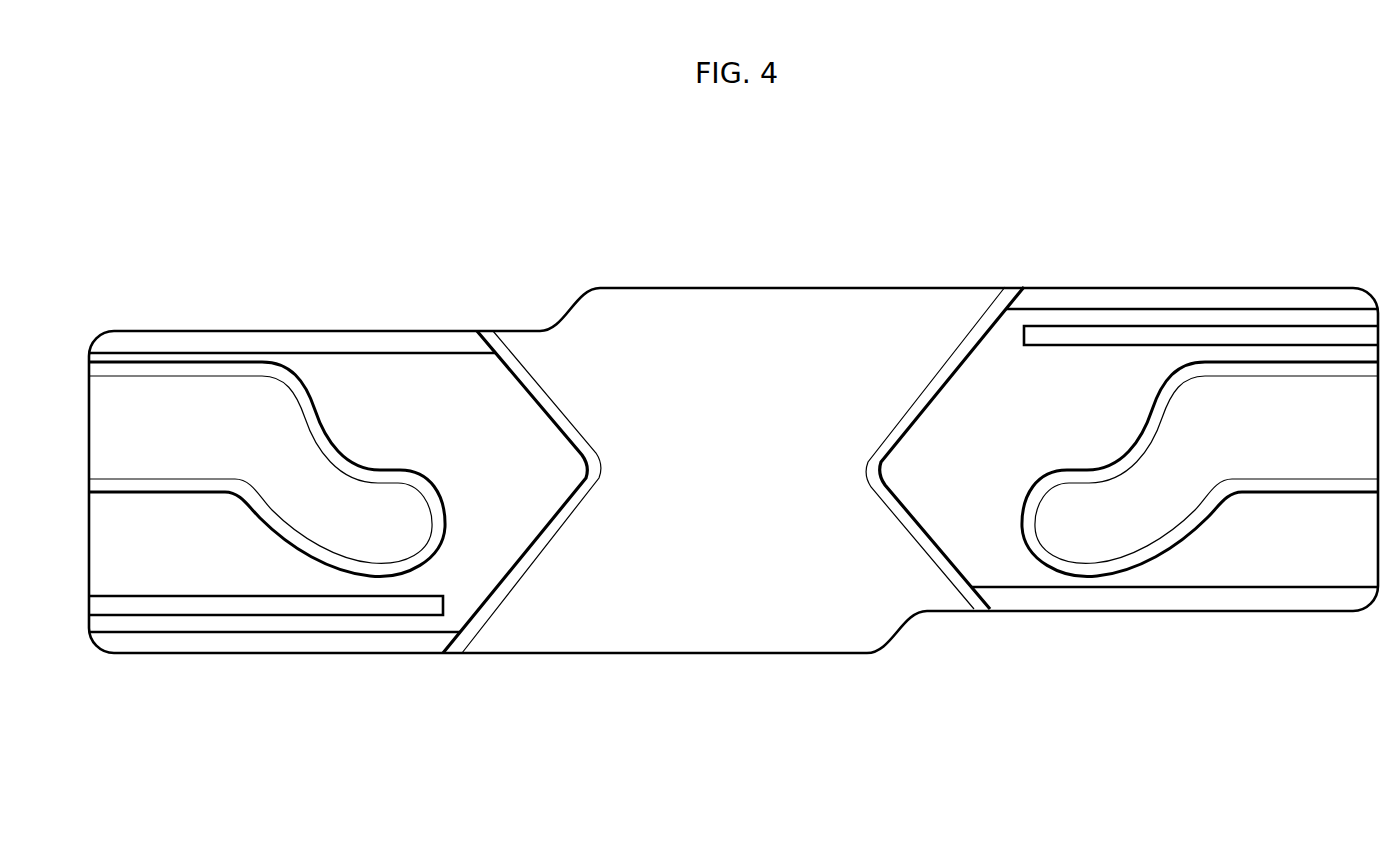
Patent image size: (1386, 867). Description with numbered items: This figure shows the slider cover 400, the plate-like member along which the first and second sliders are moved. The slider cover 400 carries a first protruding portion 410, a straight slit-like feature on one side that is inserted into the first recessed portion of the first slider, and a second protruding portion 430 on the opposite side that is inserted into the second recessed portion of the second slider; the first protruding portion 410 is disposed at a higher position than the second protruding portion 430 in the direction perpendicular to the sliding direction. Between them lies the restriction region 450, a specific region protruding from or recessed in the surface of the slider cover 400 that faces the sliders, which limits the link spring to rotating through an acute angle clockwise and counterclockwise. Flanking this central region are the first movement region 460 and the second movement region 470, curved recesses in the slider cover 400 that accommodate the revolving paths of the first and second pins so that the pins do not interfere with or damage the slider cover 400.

The slider cover 400 is at (969, 262).
The first protruding portion 410 is at (1182, 337).
The second protruding portion 430 is at (210, 603).
The restriction region 450 is at (728, 330).
The first movement region 460 is at (1282, 398).
The second movement region 470 is at (175, 397).